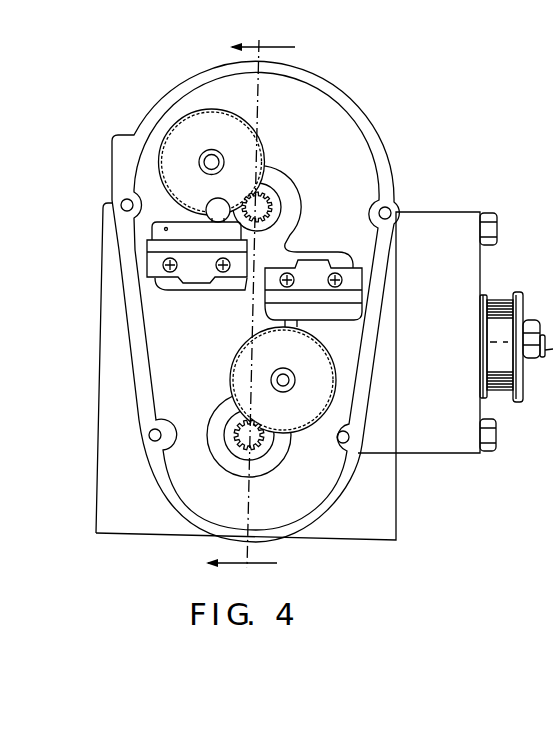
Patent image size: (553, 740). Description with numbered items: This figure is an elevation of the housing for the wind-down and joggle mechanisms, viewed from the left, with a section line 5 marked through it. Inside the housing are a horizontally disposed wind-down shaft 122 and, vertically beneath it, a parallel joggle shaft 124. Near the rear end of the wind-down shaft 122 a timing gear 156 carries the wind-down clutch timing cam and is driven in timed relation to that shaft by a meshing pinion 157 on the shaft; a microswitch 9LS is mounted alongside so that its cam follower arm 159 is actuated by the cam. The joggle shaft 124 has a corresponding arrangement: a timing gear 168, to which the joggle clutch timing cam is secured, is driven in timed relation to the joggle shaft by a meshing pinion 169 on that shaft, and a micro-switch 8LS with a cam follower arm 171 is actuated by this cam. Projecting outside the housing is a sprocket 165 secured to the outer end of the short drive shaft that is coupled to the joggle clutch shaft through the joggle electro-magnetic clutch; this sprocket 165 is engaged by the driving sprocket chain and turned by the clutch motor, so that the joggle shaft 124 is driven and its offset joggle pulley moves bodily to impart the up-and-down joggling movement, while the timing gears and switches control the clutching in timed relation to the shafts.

The timing gear 156 is at (191, 123).
The wind-down shaft 122 is at (268, 203).
The pinion 157 is at (273, 207).
The cam follower arm 159 is at (207, 207).
The microswitch 9LS is at (177, 233).
The micro-switch 8LS is at (265, 298).
The cam follower arm 171 is at (283, 325).
The timing gear 168 is at (237, 355).
The pinion 169 is at (263, 452).
The joggle shaft 124 is at (233, 440).
The sprocket 165 is at (513, 394).
The section line 5- 5 is at (258, 308).